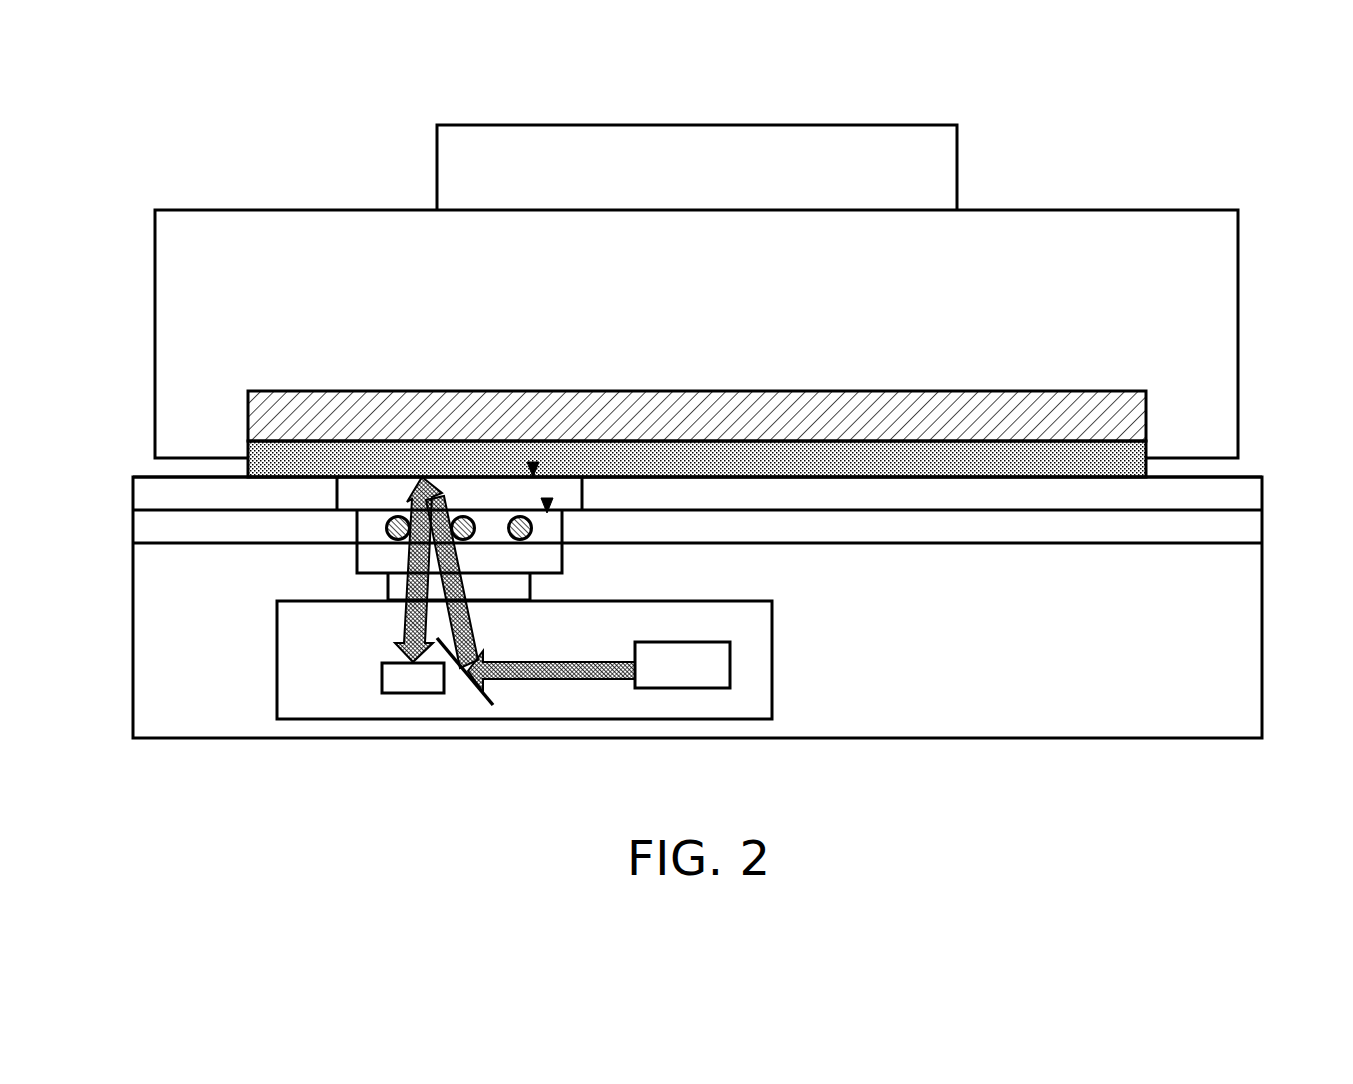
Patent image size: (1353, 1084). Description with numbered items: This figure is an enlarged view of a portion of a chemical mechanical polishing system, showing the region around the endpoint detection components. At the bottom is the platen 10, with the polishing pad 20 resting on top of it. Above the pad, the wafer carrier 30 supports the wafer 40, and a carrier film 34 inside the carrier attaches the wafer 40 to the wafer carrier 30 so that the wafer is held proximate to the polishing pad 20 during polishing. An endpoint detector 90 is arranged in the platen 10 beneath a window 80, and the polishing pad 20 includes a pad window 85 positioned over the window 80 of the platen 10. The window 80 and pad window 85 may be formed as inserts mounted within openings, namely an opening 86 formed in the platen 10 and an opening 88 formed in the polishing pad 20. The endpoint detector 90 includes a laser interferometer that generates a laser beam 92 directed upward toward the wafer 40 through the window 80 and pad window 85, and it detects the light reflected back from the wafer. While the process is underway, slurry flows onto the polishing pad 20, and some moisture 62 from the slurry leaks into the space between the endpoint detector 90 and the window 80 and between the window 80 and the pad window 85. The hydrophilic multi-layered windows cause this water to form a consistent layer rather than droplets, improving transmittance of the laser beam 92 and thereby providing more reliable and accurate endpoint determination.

The platen 10 is at (1250, 642).
The polishing pad 20 is at (1250, 493).
The wafer carrier 30 is at (168, 292).
The carrier film 34 is at (272, 415).
The wafer 40 is at (262, 453).
The moisture 62 is at (518, 515).
The window 80 is at (377, 557).
The pad window 85 is at (360, 493).
The opening 86 is at (547, 500).
The opening 88 is at (533, 465).
The endpoint detector 90 is at (525, 733).
The laser beam 92 is at (583, 681).